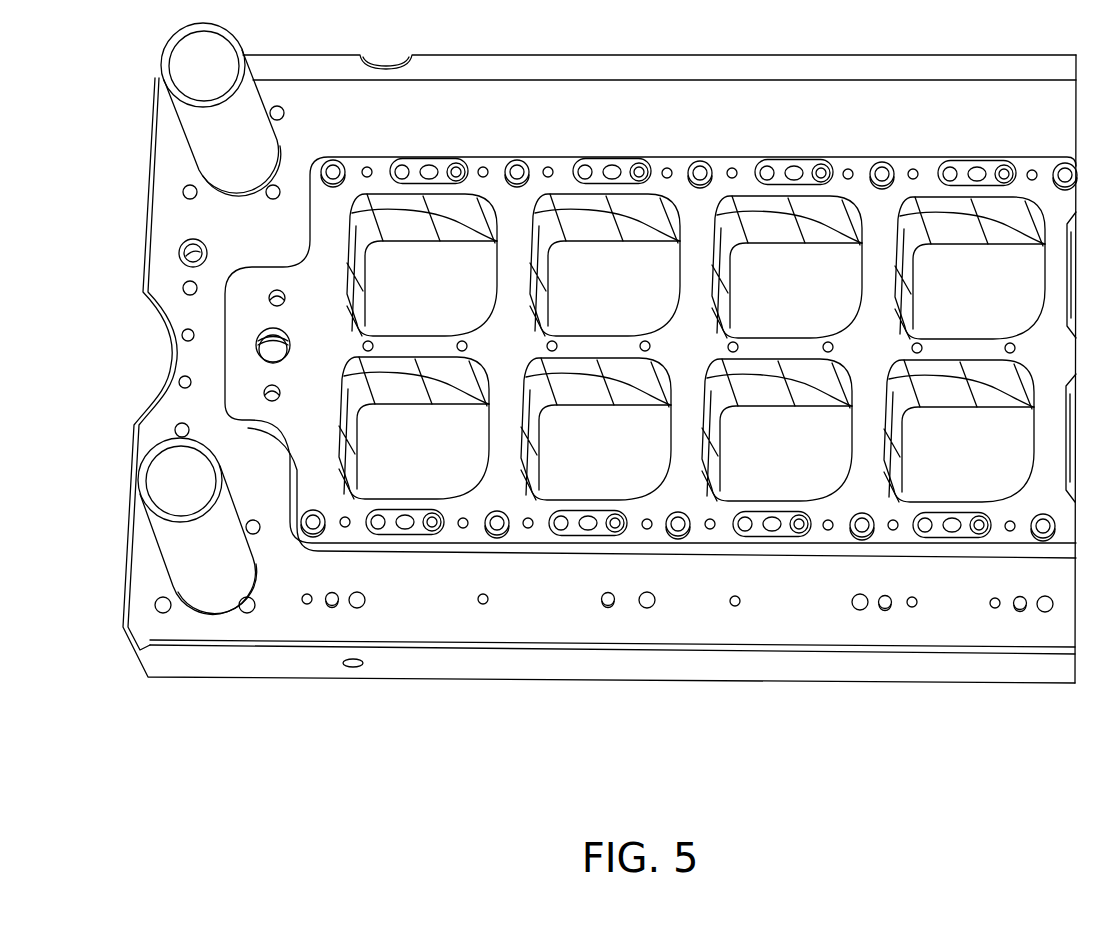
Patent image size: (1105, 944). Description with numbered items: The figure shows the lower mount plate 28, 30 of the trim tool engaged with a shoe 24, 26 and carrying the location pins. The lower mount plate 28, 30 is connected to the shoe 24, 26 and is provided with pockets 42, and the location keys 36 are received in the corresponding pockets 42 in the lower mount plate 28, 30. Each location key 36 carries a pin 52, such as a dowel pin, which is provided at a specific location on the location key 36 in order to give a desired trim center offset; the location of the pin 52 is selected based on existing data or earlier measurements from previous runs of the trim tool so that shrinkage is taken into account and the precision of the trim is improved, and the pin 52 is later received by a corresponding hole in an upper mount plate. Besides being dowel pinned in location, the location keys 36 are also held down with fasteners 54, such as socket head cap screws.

The shoe 24 is at (315, 620).
The shoe 26 is at (612, 688).
The lower mount plate 28 is at (560, 555).
The lower mount plate 30 is at (662, 577).
The location key 36 is at (456, 163).
The pocket 42 is at (429, 164).
The pin 52 is at (467, 160).
The fastener 54 is at (400, 164).